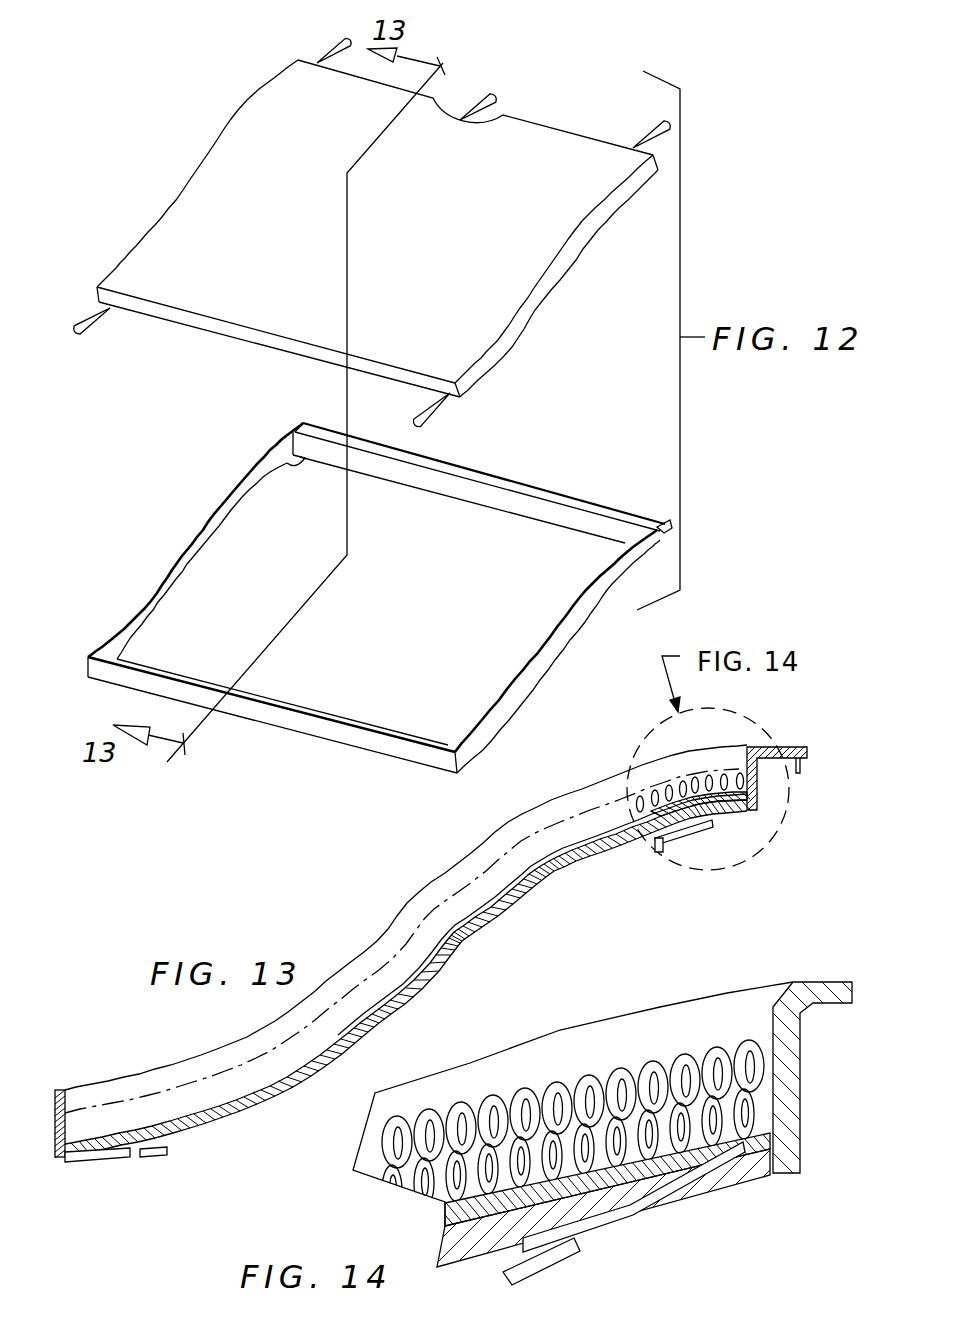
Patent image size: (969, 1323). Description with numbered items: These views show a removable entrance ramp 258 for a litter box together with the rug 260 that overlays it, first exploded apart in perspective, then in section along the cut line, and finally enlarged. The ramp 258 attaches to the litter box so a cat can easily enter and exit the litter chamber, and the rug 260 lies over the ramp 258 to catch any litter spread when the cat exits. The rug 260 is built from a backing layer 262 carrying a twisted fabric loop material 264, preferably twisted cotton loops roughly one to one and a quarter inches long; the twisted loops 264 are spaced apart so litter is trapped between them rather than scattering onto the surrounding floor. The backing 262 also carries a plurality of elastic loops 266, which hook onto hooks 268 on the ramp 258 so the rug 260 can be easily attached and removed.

In FIG. 12, the entrance ramp 258 is at (432, 631).
In FIG. 13, the entrance ramp 258 is at (270, 1093).
In FIG. 14, the entrance ramp 258 is at (674, 1120).
In FIG. 12, the rug 260 is at (230, 213).
In FIG. 13, the backing layer 262 is at (452, 950).
In FIG. 14, the backing layer 262 is at (723, 1150).
In FIG. 13, the twisted fabric loop material 264 is at (715, 772).
In FIG. 14, the twisted fabric loop material 264 is at (560, 1088).
In FIG. 12, the elastic loops 266 is at (330, 46).
In FIG. 13, the elastic loops 266 is at (120, 1157).
In FIG. 14, the elastic loops 266 is at (618, 1212).
In FIG. 13, the hooks 268 is at (168, 1152).
In FIG. 14, the hooks 268 is at (527, 1270).